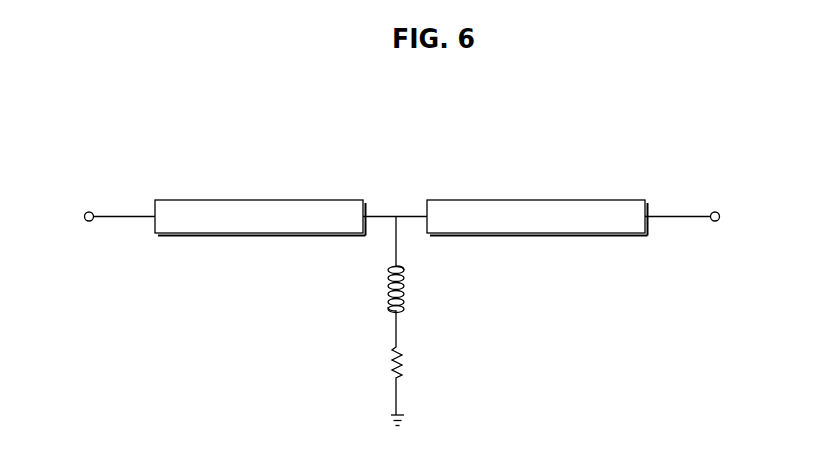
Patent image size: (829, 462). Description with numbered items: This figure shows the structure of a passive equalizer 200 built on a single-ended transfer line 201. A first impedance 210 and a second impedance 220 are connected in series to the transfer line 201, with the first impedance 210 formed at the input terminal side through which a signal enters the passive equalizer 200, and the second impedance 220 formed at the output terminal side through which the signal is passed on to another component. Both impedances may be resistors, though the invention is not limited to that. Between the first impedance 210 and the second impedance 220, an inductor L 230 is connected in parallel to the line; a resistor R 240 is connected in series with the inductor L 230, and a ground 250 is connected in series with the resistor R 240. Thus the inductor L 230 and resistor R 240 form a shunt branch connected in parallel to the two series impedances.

The passive equalizer 200 is at (124, 120).
The transfer line 201 is at (116, 212).
The first impedance 210 is at (337, 198).
The second impedance 220 is at (620, 198).
The inductor L 230 is at (388, 291).
The resistor R 240 is at (392, 362).
The ground 250 is at (390, 420).